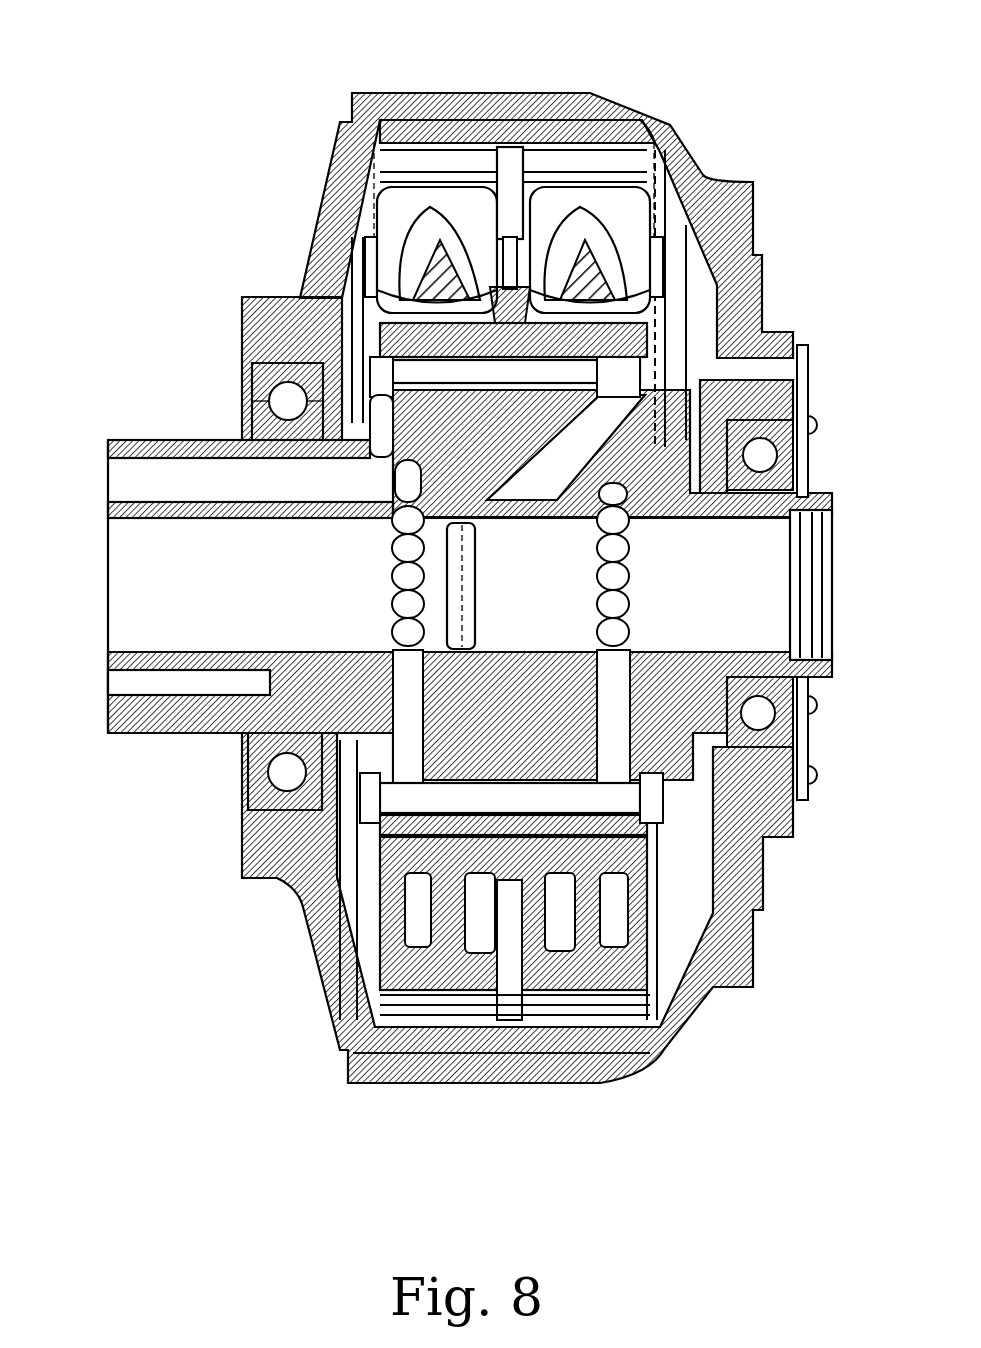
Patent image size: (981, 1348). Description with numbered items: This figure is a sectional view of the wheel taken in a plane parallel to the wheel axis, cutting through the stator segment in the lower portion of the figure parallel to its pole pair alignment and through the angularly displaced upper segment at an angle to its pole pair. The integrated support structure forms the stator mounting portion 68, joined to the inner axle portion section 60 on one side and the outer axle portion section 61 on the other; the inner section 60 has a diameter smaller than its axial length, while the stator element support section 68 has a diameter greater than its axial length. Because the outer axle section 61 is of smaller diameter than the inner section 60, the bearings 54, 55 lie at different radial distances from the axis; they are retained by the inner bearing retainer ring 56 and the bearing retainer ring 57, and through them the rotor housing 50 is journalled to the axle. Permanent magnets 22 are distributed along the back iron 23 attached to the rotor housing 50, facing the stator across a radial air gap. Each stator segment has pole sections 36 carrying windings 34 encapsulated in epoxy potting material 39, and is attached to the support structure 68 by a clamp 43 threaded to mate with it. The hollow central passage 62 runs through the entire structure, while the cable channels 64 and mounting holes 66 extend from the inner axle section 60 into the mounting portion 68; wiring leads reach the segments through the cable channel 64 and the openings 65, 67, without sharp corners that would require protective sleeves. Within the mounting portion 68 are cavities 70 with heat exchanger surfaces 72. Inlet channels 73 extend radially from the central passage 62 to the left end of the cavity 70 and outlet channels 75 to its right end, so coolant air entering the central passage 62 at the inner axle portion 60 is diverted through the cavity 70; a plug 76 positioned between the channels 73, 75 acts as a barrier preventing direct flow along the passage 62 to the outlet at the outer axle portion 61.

The permanent magnets 22 is at (395, 157).
The back iron 23 is at (430, 135).
The windings 34 is at (555, 265).
The pole sections 36 is at (655, 137).
The epoxy potting material 39 is at (592, 208).
The clamp 43 is at (490, 250).
The rotor housing 50 is at (755, 185).
The bearing 54 is at (262, 381).
The bearing 55 is at (805, 440).
The inner bearing retainer ring 56 is at (240, 315).
The bearing retainer ring 57 is at (800, 355).
The inner axle portion section 60 is at (137, 740).
The outer axle portion section 61 is at (835, 490).
The hollow central passage 62 is at (135, 570).
The cable channels 64 is at (125, 470).
The opening 65 is at (528, 462).
The mounting holes 66 is at (125, 690).
The opening 67 is at (380, 455).
The stator mounting portion 68 is at (555, 520).
The cavity 70 is at (455, 805).
The heat exchanger surfaces 72 is at (500, 790).
The inlet channels 73 is at (403, 700).
The outlet channels 75 is at (615, 690).
The plug 76 is at (480, 620).